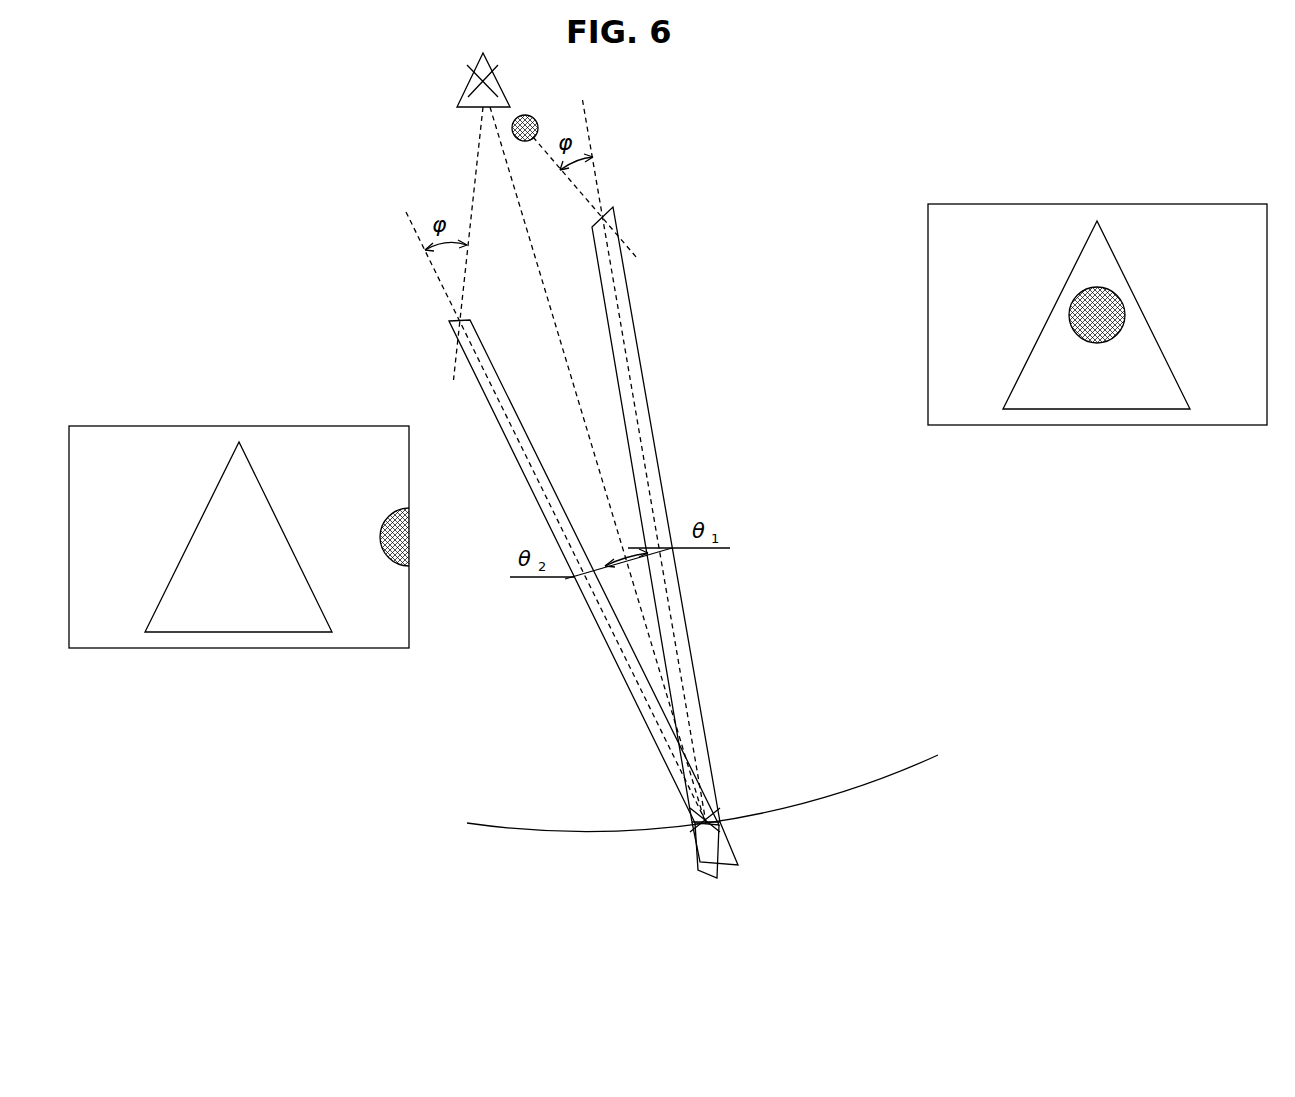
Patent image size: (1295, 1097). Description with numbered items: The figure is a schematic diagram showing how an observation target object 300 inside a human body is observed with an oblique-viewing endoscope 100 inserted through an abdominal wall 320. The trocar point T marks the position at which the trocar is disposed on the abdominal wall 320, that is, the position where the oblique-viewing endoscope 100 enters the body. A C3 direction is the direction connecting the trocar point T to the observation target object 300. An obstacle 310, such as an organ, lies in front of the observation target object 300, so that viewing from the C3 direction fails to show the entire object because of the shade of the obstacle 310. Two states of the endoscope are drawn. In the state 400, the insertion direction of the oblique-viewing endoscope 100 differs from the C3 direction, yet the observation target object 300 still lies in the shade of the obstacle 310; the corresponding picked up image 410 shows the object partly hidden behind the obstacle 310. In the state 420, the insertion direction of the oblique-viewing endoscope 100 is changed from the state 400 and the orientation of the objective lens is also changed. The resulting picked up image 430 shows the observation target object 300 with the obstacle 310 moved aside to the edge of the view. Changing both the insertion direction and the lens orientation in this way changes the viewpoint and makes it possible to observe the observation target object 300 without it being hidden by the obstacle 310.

The oblique-viewing endoscope 100 is at (502, 432).
The observation target object 300 is at (505, 75).
The obstacle 310 is at (526, 114).
The abdominal wall 320 is at (868, 788).
The state 400 is at (650, 370).
The picked up image 410 is at (993, 204).
The state 420 is at (526, 480).
The picked up image 430 is at (134, 425).
The C3 direction C3 is at (542, 282).
The trocar point T is at (717, 795).